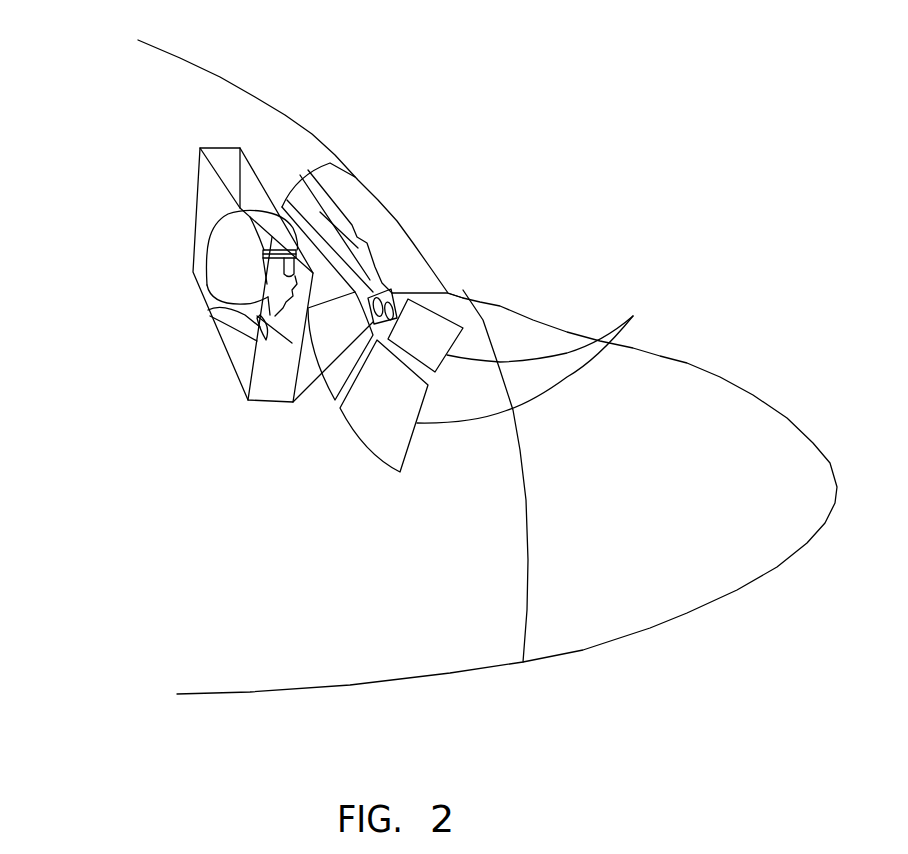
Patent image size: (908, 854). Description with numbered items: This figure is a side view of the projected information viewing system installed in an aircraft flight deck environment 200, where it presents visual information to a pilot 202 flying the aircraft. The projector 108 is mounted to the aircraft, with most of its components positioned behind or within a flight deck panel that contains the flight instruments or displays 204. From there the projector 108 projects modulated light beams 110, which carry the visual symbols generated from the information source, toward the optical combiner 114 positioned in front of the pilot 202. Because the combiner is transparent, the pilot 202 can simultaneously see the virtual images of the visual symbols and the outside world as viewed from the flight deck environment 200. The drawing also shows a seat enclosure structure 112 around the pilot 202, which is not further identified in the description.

The aircraft flight deck environment 200 is at (688, 363).
The flight instruments or displays 204 is at (548, 353).
The seat enclosure 112 is at (238, 352).
The pilot 202 is at (225, 250).
The optical combiner 114 is at (338, 240).
The modulated light beams 110 is at (343, 237).
The projector 108 is at (393, 288).